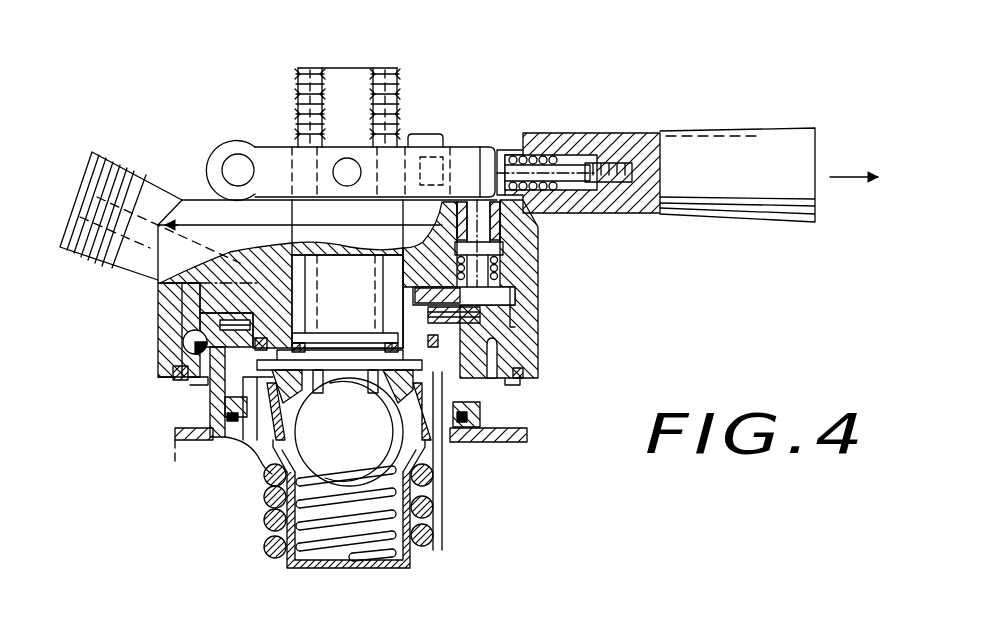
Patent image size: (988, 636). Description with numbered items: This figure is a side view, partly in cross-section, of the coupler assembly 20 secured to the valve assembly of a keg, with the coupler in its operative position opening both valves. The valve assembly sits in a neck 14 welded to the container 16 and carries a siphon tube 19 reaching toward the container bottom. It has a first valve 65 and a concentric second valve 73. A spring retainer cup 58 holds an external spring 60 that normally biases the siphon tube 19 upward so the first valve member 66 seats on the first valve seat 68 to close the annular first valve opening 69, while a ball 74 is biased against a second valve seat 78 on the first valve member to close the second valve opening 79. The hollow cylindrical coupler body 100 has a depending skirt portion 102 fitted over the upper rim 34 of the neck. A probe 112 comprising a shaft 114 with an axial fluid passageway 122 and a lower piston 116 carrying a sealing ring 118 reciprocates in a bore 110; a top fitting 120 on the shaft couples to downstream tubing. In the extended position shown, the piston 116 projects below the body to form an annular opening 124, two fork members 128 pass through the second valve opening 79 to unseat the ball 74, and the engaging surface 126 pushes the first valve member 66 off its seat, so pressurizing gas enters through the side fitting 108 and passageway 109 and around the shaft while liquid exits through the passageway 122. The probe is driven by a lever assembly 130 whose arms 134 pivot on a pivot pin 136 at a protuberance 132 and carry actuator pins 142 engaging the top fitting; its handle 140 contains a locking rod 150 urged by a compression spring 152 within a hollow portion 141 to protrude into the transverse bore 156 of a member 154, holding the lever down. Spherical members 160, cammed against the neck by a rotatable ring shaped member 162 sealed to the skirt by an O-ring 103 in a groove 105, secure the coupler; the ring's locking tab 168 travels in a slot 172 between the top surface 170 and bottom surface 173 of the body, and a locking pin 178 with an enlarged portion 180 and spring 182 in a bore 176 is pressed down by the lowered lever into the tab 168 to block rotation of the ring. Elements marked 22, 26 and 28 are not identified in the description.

The neck 14 is at (154, 441).
The container 16 is at (533, 444).
The siphon tube 19 is at (411, 566).
The coupler assembly 20 is at (491, 92).
The base flange 22 is at (198, 418).
The flange portion 26 is at (505, 445).
The retainer 28 is at (460, 445).
The upper rim portion 34 is at (185, 336).
The spring retainer cup 58 is at (436, 504).
The helical compression external spring 60 is at (424, 546).
The first valve 65 is at (442, 370).
The first valve member 66 is at (257, 438).
The first valve seat 68 is at (265, 365).
The annular first valve opening 69 is at (426, 364).
The second valve 73 is at (352, 478).
The second valve member 74 is at (349, 432).
The second valve seat 78 is at (390, 408).
The second valve opening 79 is at (320, 385).
The coupler body 100 is at (178, 293).
The skirt portion 102 is at (185, 314).
The O-ring 103 is at (172, 373).
The circumferential groove 105 is at (188, 386).
The side fitting 108 is at (94, 148).
The passageway 109 is at (270, 250).
The bore 110 is at (392, 277).
The probe 112 is at (345, 295).
The shaft 114 is at (331, 258).
The lower piston 116 is at (305, 385).
The sealing ring 118 is at (300, 322).
The top fitting 120 is at (297, 75).
The fluid passageway 122 is at (338, 72).
The annular opening 124 is at (444, 447).
The first valve member engaging surface 126 is at (262, 452).
The fork members 128 is at (315, 435).
The lever assembly 130 is at (490, 142).
The protuberance 132 is at (222, 146).
The arms 134 is at (277, 147).
The pivot pin 136 is at (230, 165).
The handle 140 is at (812, 149).
The hollow portion 141 is at (618, 152).
The actuator pins 142 is at (349, 158).
The locking rod 150 is at (509, 152).
The compression spring 152 is at (576, 152).
The member 154 is at (417, 134).
The transverse bore 156 is at (432, 157).
The spherical members 160 is at (182, 345).
The ring shaped member 162 is at (545, 355).
The locking tab 168 is at (503, 297).
The top surface 170 is at (191, 197).
The slot 172 is at (512, 304).
The bottom surface 173 is at (512, 385).
The bore 176 is at (530, 224).
The locking pin 178 is at (502, 281).
The diametrically enlarged portion 180 is at (548, 253).
The spring 182 is at (500, 266).